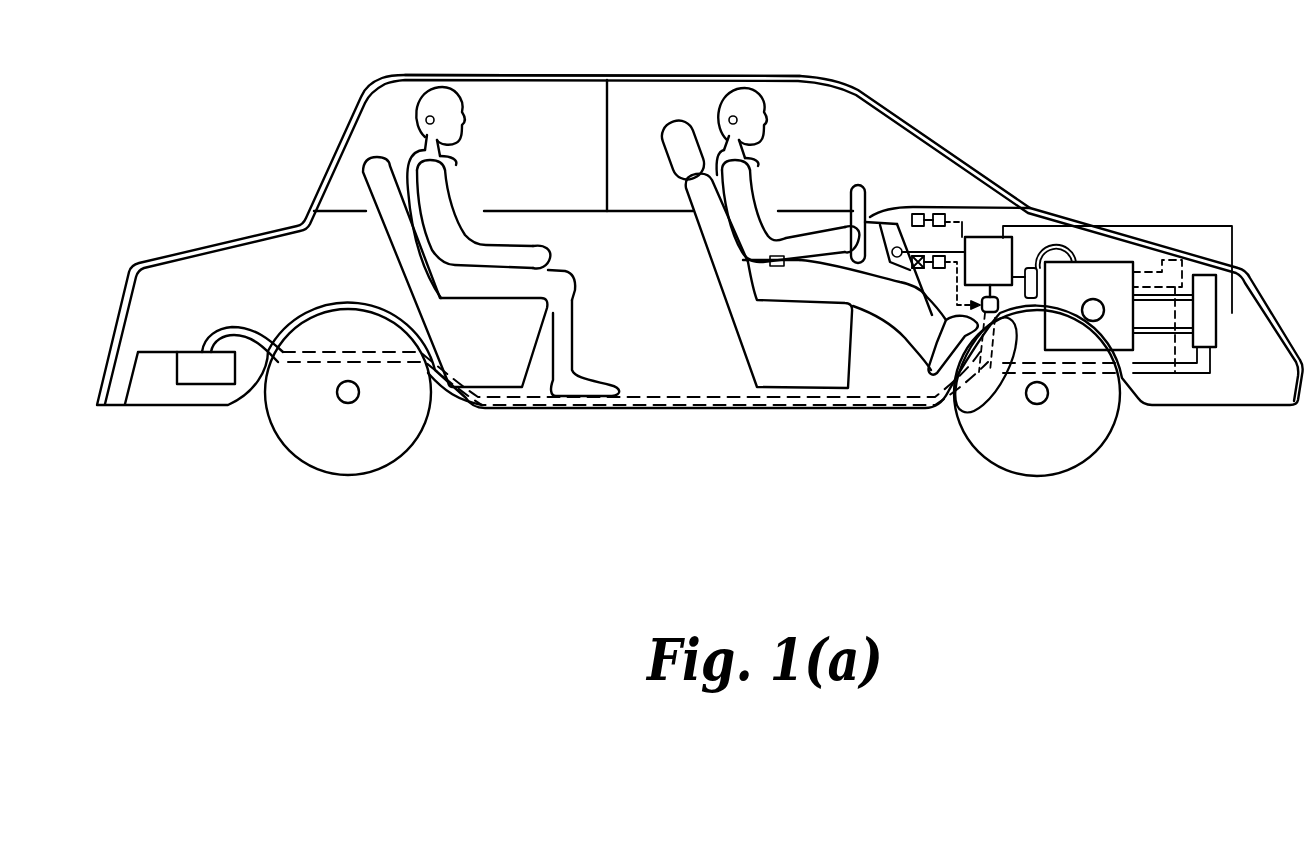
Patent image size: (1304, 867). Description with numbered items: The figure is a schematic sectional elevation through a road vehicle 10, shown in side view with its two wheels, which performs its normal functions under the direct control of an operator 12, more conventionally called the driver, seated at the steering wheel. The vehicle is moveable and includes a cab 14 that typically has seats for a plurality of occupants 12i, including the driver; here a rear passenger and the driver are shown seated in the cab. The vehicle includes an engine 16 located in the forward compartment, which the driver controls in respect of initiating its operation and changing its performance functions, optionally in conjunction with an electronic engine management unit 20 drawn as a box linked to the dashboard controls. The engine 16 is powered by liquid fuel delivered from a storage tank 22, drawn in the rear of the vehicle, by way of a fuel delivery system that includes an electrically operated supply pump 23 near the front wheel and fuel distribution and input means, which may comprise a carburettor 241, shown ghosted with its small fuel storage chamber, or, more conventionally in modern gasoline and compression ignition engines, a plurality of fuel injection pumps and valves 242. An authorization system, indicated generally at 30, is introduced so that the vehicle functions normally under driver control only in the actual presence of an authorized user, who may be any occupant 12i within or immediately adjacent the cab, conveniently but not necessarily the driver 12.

The vehicle 10 is at (315, 85).
The operator 12 is at (760, 77).
The occupants 12i is at (576, 398).
The cab 14 is at (560, 105).
The engine 16 is at (1117, 272).
The electronic engine management unit 20 is at (982, 245).
The storage tank 22 is at (198, 368).
The electrically operated supply pump 23 is at (1008, 322).
The carburettor 241 is at (1190, 260).
The fuel injection pumps and valves 242 is at (1216, 328).
The authorization system 30 is at (907, 296).